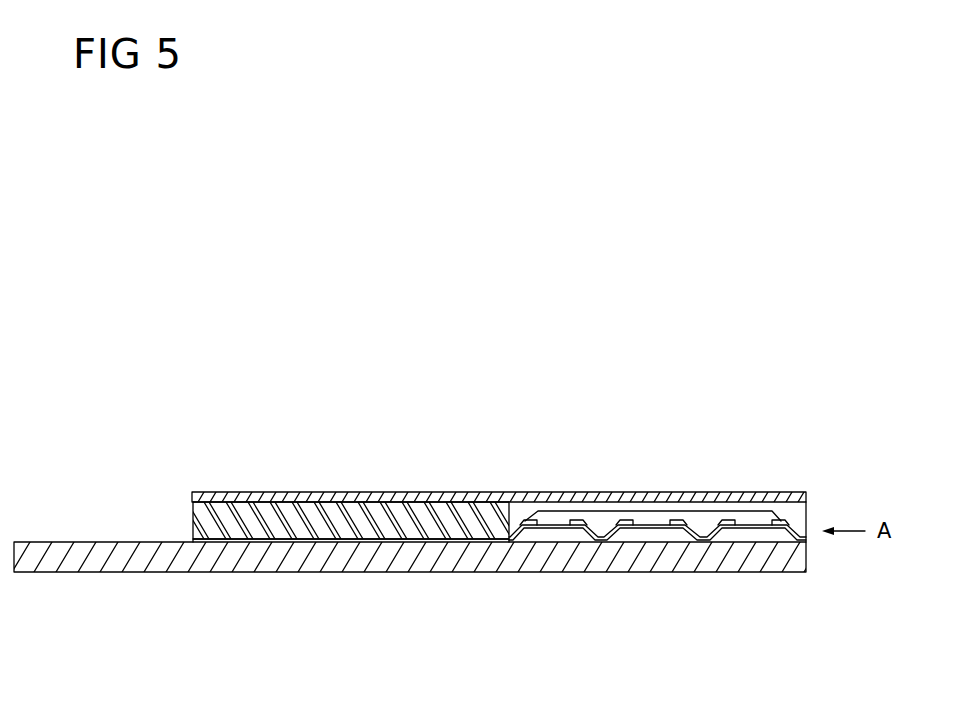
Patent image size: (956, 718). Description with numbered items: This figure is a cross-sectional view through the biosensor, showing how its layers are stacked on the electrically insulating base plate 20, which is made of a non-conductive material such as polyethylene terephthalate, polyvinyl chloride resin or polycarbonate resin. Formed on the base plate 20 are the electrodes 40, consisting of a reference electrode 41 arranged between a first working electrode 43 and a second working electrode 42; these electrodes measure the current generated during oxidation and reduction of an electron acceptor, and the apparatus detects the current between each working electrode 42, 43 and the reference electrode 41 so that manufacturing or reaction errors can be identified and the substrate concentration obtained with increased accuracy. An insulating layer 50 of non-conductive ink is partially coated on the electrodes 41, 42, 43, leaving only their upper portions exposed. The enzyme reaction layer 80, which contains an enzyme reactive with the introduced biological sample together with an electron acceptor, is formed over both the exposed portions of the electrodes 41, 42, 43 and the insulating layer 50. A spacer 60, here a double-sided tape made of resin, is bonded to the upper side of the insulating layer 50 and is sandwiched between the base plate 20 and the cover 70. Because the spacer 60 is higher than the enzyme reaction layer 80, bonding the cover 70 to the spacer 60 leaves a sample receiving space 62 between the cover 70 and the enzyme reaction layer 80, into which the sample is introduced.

The base plate 20 is at (298, 572).
The electrodes 40 is at (657, 603).
The reference electrode 41 is at (661, 535).
The second working electrode 42 is at (567, 538).
The first working electrode 43 is at (742, 535).
The insulating layer 50 is at (486, 540).
The spacer 60 is at (255, 517).
The sample receiving space 62 is at (800, 506).
The cover 70 is at (474, 494).
The enzyme reaction layer 80 is at (703, 522).